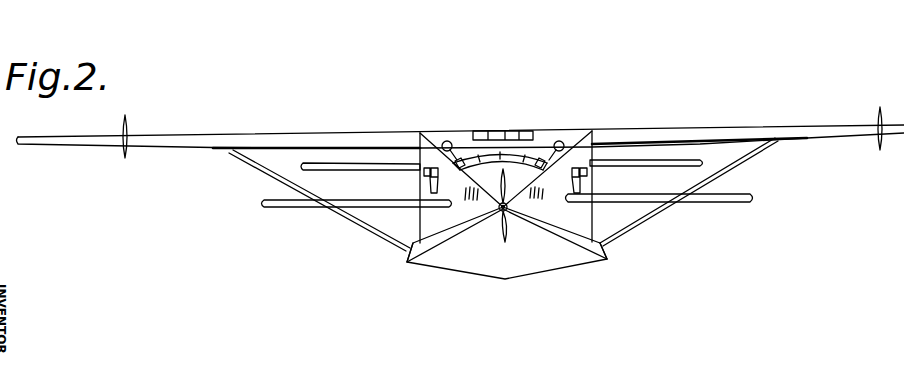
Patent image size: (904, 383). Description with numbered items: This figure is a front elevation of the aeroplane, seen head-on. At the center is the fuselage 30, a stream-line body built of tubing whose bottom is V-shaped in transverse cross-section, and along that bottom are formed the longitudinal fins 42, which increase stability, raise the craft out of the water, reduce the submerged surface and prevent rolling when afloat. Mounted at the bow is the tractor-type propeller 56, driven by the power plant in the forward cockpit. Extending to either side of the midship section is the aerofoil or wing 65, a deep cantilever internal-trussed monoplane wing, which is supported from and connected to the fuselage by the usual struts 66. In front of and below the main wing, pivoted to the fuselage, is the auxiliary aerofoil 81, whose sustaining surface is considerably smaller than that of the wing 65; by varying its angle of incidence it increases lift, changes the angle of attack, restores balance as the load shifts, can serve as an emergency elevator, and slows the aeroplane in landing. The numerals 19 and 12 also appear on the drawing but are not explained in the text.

The aerofoil or wing 65 is at (306, 134).
The struts 66 is at (740, 163).
The auxiliary aerofoil 81 is at (322, 207).
The engine 19 is at (430, 183).
The hull sponson 12 is at (405, 254).
The longitudinal fins 42 is at (610, 256).
The fuselage 30 is at (507, 205).
The propeller 56 is at (500, 238).